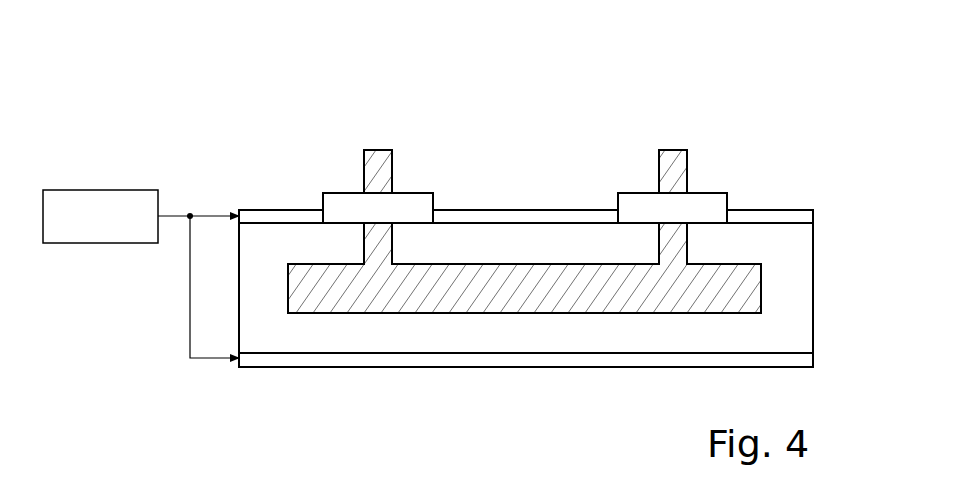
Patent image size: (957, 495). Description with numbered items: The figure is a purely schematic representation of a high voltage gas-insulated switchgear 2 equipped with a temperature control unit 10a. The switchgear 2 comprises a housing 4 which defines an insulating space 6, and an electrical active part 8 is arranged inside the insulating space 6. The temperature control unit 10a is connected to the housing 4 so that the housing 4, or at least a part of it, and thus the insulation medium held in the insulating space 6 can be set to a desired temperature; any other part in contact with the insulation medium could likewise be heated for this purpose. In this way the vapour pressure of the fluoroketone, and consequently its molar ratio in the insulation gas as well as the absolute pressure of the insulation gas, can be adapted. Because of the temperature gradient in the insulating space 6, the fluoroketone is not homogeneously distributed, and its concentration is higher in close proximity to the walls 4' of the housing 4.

The switchgear 2 is at (492, 153).
The housing 4 is at (526, 165).
The walls 4' is at (526, 409).
The insulating space 6 is at (492, 245).
The electrical active part 8 is at (417, 292).
The temperature control unit 10a is at (102, 190).